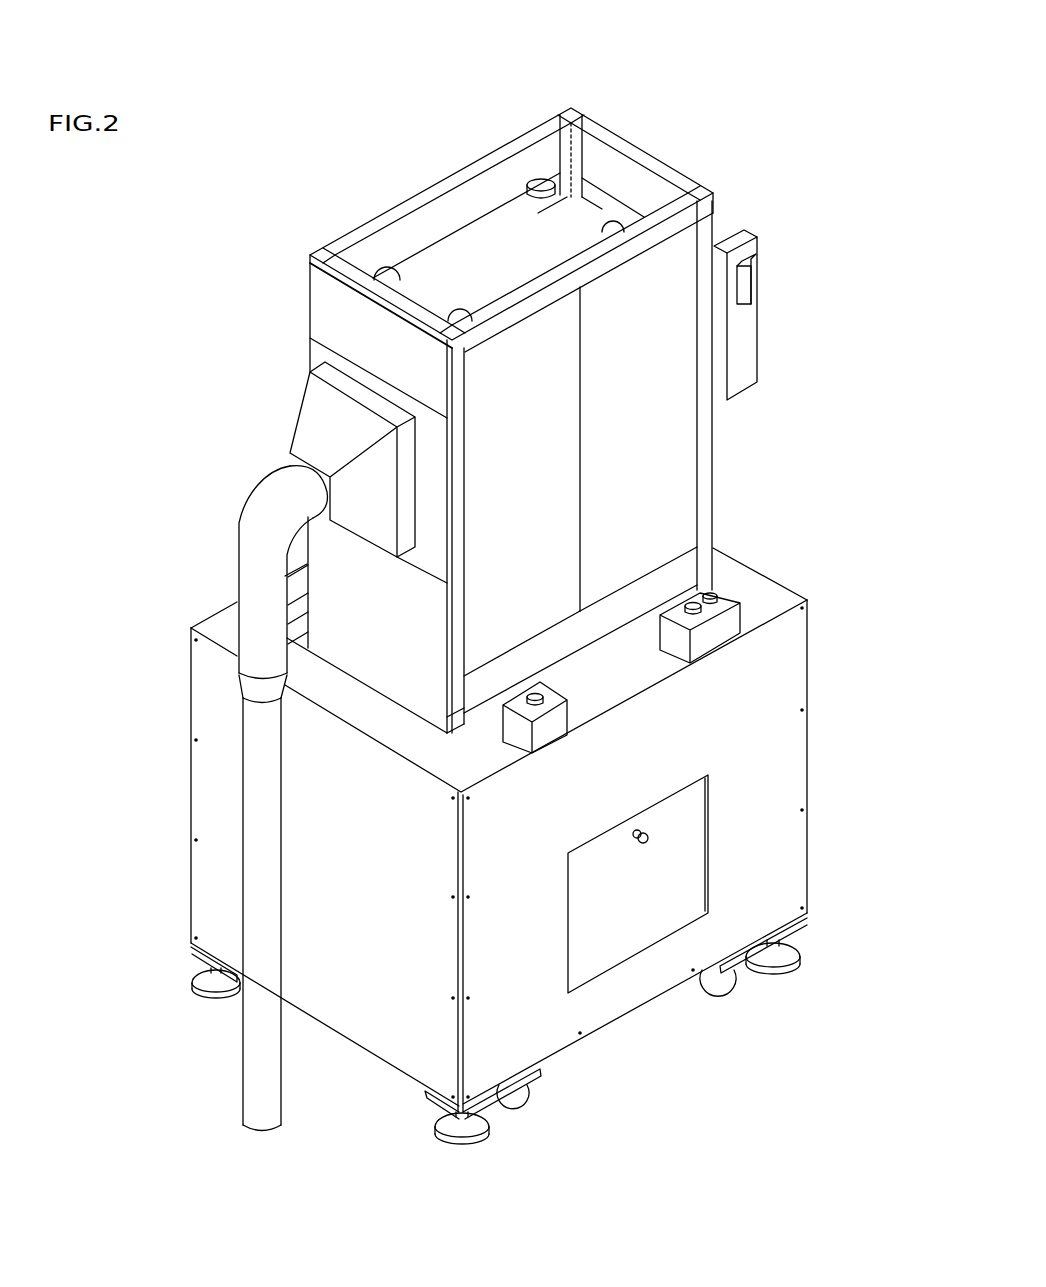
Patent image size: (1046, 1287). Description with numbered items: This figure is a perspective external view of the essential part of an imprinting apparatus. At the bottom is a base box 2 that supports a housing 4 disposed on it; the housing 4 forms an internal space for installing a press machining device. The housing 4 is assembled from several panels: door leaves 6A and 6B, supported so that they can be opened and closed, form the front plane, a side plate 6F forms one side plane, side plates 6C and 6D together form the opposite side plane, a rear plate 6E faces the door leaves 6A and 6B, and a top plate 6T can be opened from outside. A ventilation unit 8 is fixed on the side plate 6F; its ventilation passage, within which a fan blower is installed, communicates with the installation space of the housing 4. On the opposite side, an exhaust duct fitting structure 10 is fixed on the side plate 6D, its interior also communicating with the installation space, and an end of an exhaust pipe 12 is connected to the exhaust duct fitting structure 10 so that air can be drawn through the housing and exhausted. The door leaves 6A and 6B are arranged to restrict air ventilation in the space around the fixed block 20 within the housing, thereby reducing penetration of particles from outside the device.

The base box 2 is at (778, 774).
The housing 4 is at (707, 487).
The door leaf 6A is at (506, 380).
The door leaf 6B is at (668, 272).
The side plate 6C is at (337, 590).
The side plate 6D is at (348, 315).
The rear plate 6E is at (423, 222).
The side plate 6F is at (628, 185).
The top plate 6T is at (588, 172).
The ventilation unit 8 is at (744, 343).
The exhaust duct fitting structure 10 is at (312, 423).
The exhaust pipe 12 is at (251, 876).
The fixed block 20 is at (508, 208).